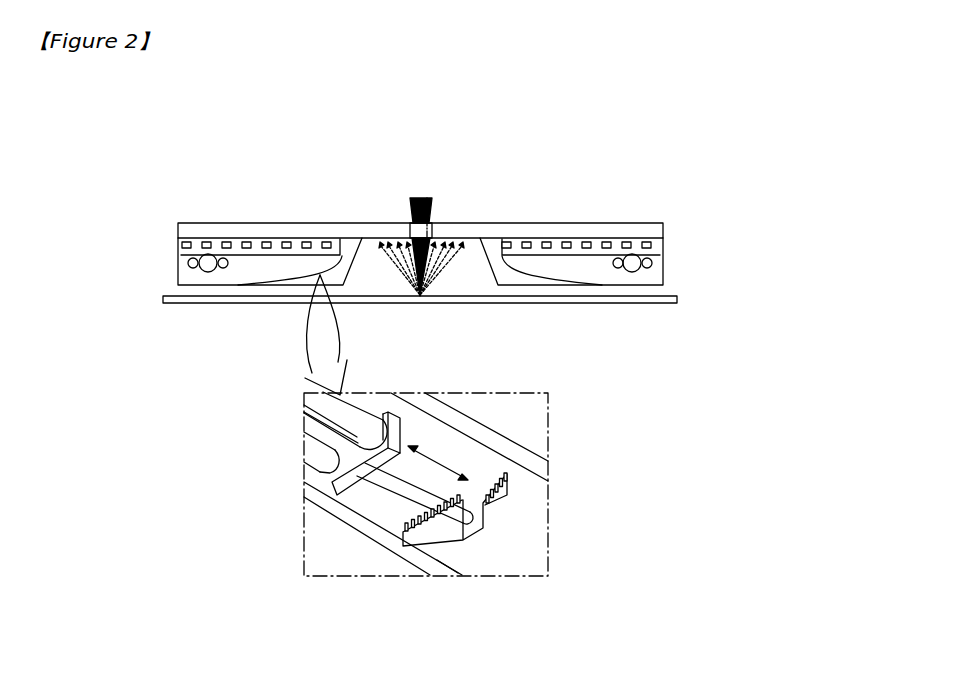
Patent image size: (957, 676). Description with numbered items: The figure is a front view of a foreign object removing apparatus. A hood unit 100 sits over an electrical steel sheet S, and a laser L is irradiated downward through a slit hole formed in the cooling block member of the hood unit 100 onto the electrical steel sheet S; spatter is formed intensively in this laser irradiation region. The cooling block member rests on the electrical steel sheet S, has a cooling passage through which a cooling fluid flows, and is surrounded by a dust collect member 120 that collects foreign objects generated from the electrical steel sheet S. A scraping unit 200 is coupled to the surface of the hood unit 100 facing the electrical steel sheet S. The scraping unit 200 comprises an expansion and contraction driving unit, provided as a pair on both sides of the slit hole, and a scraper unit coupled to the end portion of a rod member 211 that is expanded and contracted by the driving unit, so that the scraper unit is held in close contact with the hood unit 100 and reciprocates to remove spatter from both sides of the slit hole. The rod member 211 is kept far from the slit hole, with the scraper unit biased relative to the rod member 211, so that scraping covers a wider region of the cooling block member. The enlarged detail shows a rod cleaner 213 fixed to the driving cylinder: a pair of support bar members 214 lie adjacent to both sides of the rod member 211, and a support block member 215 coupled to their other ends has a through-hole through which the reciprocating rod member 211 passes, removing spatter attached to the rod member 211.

The hood unit 100 is at (367, 143).
The dust collect member 120 is at (177, 264).
The laser L is at (420, 197).
The electrical steel sheet S is at (232, 305).
The scraping unit 200 is at (735, 302).
The rod member 211 is at (413, 480).
The rod cleaner 213 is at (225, 410).
The support bar member 214 is at (323, 406).
The support block member 215 is at (318, 495).